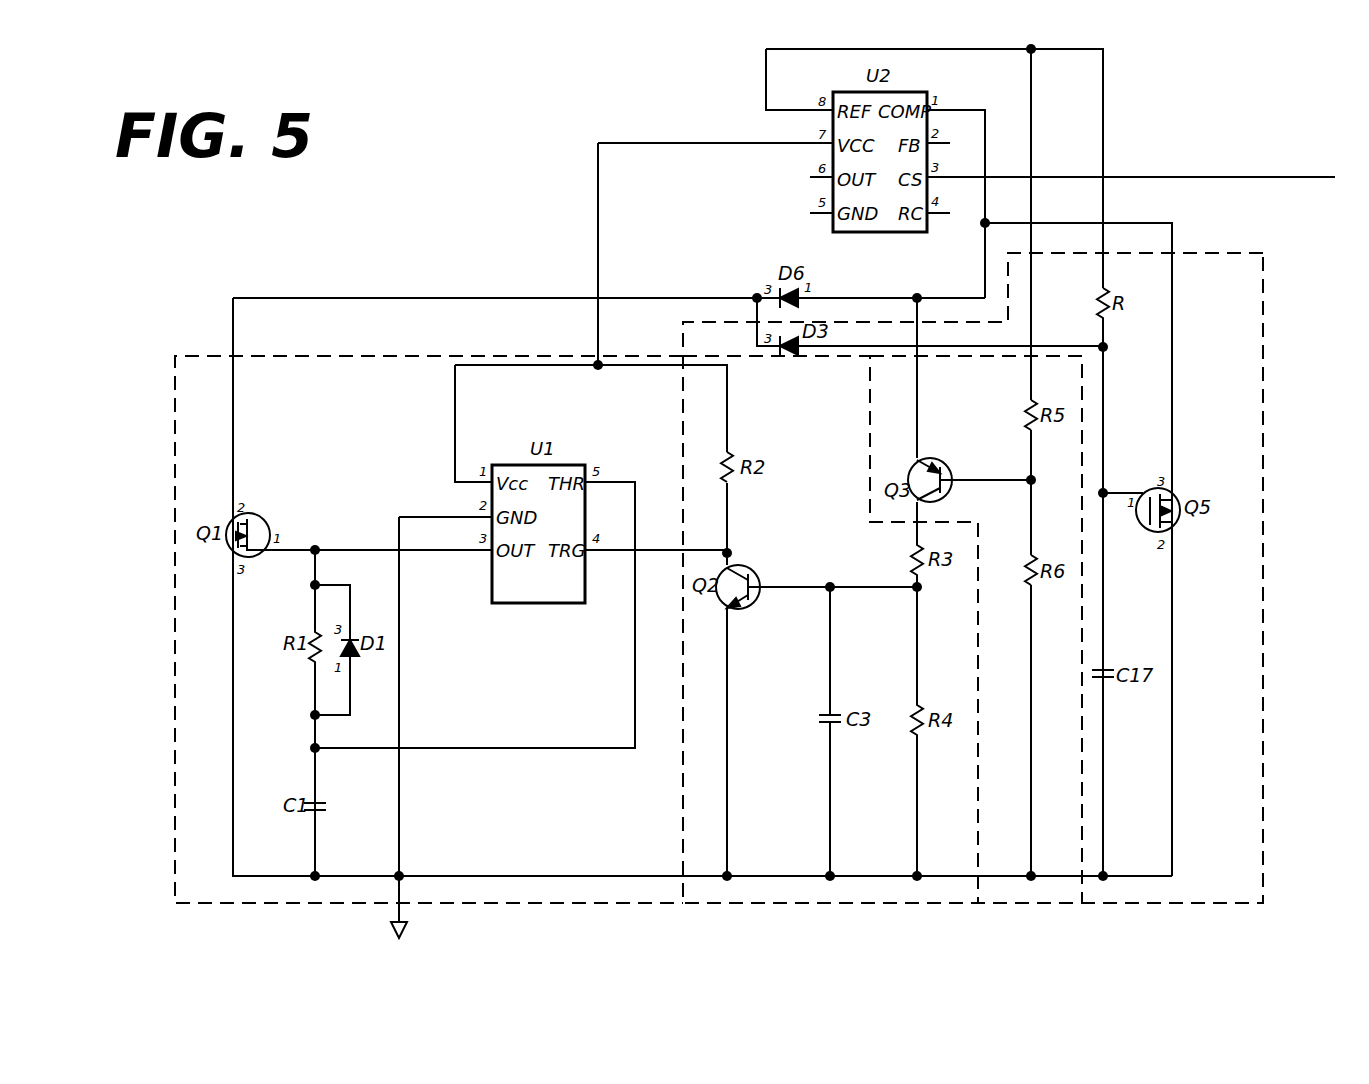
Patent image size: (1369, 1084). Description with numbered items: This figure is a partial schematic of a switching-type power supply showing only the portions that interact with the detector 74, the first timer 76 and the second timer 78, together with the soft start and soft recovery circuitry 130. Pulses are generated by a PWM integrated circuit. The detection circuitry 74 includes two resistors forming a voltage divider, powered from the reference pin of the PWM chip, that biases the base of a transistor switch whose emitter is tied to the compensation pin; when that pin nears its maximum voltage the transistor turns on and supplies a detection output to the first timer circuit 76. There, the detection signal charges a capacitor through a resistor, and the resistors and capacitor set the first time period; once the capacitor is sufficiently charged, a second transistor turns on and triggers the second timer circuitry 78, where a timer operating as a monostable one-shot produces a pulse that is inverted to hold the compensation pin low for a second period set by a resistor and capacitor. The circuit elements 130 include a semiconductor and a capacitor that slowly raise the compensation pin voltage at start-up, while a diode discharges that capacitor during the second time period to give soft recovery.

The detection circuitry 74 is at (1030, 898).
The first timer circuit 76 is at (865, 893).
The second timer circuit 78 is at (518, 893).
The soft start and soft recovery circuitry 130 is at (1225, 882).